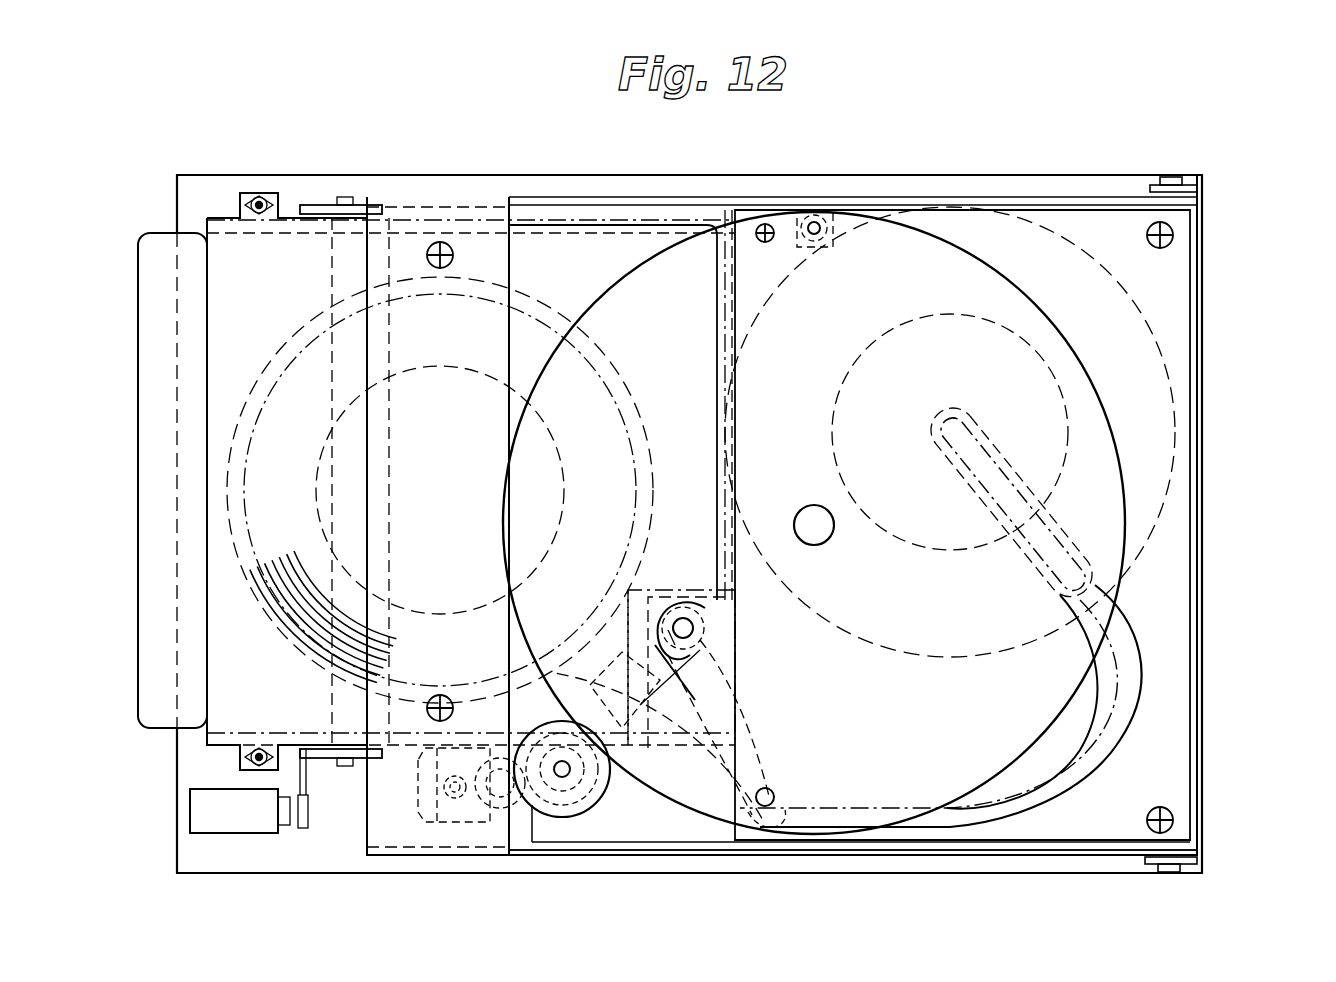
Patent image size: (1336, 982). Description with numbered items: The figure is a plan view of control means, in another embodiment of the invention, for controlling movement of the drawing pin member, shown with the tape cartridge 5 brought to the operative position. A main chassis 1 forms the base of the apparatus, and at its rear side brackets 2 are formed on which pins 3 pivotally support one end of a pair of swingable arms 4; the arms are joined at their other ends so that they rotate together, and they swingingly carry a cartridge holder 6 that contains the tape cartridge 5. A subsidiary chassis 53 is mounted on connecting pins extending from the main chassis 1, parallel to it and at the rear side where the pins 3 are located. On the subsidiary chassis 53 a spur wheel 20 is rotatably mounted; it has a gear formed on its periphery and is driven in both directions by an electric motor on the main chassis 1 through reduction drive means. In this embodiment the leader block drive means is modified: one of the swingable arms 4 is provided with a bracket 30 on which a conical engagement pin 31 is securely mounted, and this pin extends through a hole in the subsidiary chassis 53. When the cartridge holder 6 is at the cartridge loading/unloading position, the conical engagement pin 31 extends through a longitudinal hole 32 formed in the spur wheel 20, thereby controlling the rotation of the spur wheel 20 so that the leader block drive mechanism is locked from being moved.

The main chassis 1 is at (220, 190).
The bracket 2 is at (1200, 190).
The pin 3 is at (1170, 183).
The swingable arm 4 is at (1052, 200).
The tape cartridge 5 is at (150, 336).
The cartridge holder 6 is at (290, 215).
The spur wheel 20 is at (665, 280).
The bracket 30 is at (835, 232).
The conical engagement pin 31 is at (814, 222).
The longitudinal hole 32 is at (800, 225).
The subsidiary chassis 53 is at (1168, 295).